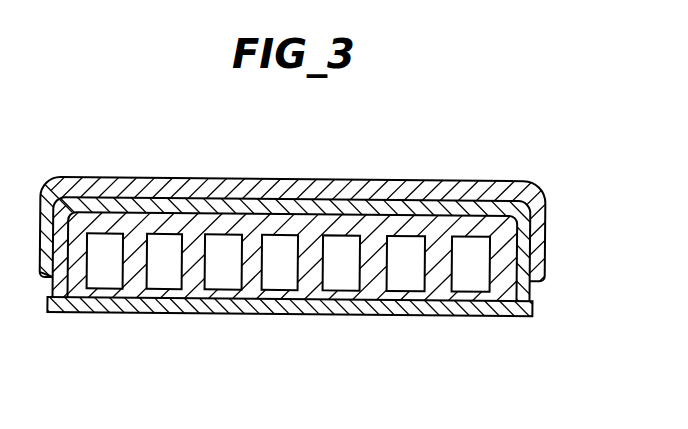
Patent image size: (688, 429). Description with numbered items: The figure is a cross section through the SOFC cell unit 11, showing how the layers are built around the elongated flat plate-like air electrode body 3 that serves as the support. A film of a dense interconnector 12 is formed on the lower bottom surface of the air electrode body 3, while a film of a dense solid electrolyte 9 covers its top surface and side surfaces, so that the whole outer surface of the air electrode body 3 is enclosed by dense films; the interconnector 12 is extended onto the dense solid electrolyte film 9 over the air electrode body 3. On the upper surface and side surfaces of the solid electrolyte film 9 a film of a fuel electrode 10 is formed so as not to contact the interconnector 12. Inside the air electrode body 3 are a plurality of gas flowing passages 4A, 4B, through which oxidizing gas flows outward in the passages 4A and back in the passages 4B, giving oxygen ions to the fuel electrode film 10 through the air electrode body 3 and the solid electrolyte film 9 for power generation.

The air electrode body 3 is at (505, 237).
The gas flowing passage 4A is at (107, 240).
The gas flowing passage 4B is at (163, 240).
The dense solid electrolyte film 9 is at (303, 206).
The fuel electrode film 10 is at (273, 188).
The SOFC cell unit 11 is at (530, 184).
The dense interconnector 12 is at (314, 299).